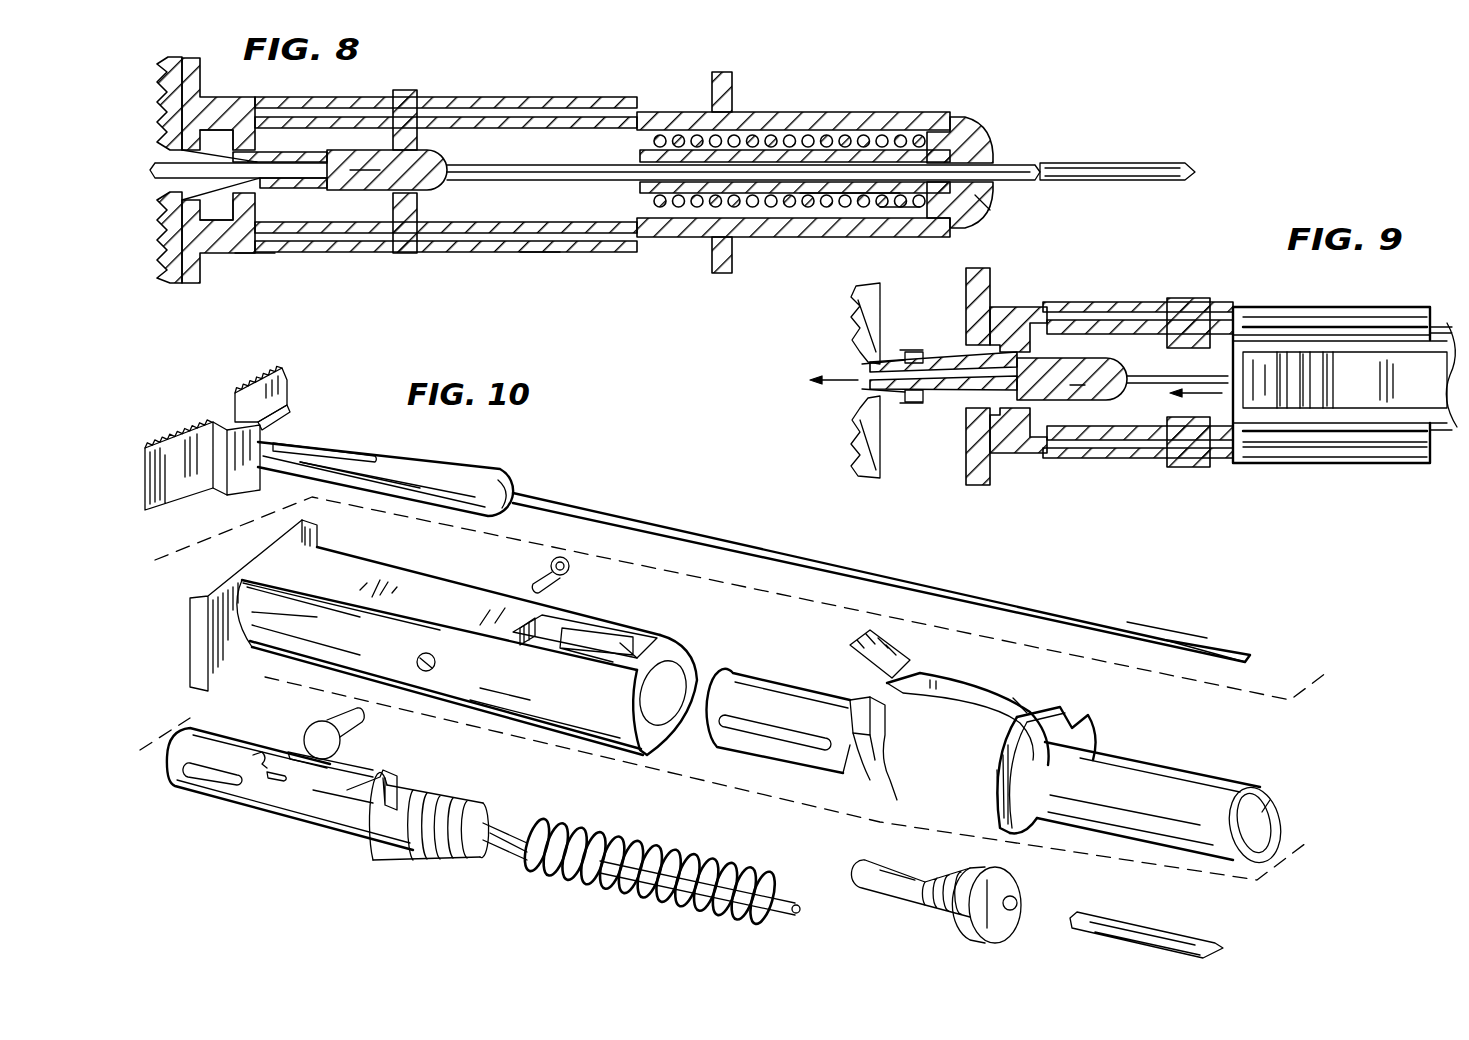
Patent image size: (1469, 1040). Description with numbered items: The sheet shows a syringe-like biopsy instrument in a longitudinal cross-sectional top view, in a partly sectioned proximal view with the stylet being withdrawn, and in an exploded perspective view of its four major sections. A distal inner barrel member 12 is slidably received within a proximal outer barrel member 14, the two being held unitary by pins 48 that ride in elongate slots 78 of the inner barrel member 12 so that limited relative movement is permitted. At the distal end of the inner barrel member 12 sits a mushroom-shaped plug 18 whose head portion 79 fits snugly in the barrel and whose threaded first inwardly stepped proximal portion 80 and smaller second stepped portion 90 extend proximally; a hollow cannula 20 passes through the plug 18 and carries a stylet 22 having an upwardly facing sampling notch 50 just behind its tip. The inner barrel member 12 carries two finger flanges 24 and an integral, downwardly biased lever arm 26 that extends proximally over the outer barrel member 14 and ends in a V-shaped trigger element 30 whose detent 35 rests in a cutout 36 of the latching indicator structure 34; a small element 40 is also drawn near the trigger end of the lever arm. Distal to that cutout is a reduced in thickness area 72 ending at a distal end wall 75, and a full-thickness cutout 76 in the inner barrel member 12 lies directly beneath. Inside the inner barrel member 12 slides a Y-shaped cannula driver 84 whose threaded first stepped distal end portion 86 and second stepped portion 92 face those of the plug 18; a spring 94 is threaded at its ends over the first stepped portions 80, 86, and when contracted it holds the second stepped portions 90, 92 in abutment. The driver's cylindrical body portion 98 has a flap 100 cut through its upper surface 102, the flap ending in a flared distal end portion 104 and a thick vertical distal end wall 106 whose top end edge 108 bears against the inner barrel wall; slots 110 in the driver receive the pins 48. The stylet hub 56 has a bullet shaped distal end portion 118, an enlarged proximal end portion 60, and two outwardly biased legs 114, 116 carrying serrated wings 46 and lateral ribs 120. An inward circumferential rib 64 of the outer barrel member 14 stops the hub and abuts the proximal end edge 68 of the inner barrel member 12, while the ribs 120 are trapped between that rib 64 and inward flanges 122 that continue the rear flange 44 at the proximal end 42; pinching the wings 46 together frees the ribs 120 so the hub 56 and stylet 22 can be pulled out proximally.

In FIG. 8, the inner barrel member 12 is at (874, 106).
In FIG. 9, the inner barrel member 12 is at (1080, 328).
In FIG. 10, the inner barrel member 12 is at (1207, 768).
In FIG. 8, the outer barrel member 14 is at (554, 94).
In FIG. 9, the outer barrel member 14 is at (1222, 316).
In FIG. 10, the outer barrel member 14 is at (488, 583).
In FIG. 8, the plug 18 is at (994, 133).
In FIG. 10, the plug 18 is at (1028, 893).
In FIG. 8, the cannula 20 is at (1082, 164).
In FIG. 10, the cannula 20 is at (789, 918).
In FIG. 8, the stylet 22 is at (485, 183).
In FIG. 10, the stylet 22 is at (617, 510).
In FIG. 8, the finger flanges 24 is at (733, 82).
In FIG. 10, the finger flanges 24 is at (1088, 730).
In FIG. 9, the lever arm 26 is at (1400, 395).
In FIG. 10, the lever arm 26 is at (1036, 698).
In FIG. 10, the trigger element 30 is at (880, 700).
In FIG. 10, the latching indicator structure 34 is at (612, 624).
In FIG. 10, the detent 35 is at (876, 743).
In FIG. 10, the cutout 36 is at (552, 626).
In FIG. 10, the serrated button 40 is at (897, 640).
In FIG. 8, the proximal end 42 is at (197, 72).
In FIG. 9, the proximal end 42 is at (1008, 465).
In FIG. 10, the proximal end 42 is at (330, 548).
In FIG. 8, the rear flange 44 is at (197, 260).
In FIG. 9, the rear flange 44 is at (992, 279).
In FIG. 10, the rear flange 44 is at (220, 628).
In FIG. 8, the wings 46 is at (167, 241).
In FIG. 9, the wings 46 is at (870, 338).
In FIG. 10, the wings 46 is at (250, 392).
In FIG. 8, the pins 48 is at (410, 253).
In FIG. 9, the pins 48 is at (1196, 468).
In FIG. 10, the pins 48 is at (560, 578).
In FIG. 10, the sampling notch 50 is at (1180, 630).
In FIG. 8, the stylet hub 56 is at (320, 197).
In FIG. 9, the stylet hub 56 is at (1113, 405).
In FIG. 10, the stylet hub 56 is at (459, 459).
In FIG. 10, the proximal end portion 60 is at (216, 487).
In FIG. 8, the rib 64 is at (240, 128).
In FIG. 8, the proximal end edge 68 is at (258, 240).
In FIG. 10, the proximal end edge 68 is at (712, 730).
In FIG. 10, the reduced in thickness area 72 is at (603, 650).
In FIG. 10, the distal end wall 75 is at (660, 640).
In FIG. 10, the cutout 76 is at (850, 753).
In FIG. 10, the slots 78 is at (795, 742).
In FIG. 8, the head portion 79 is at (988, 208).
In FIG. 10, the head portion 79 is at (1020, 873).
In FIG. 8, the first inwardly stepped proximal portion 80 is at (902, 208).
In FIG. 10, the first inwardly stepped proximal portion 80 is at (946, 862).
In FIG. 10, the cannula driver 84 is at (200, 804).
In FIG. 8, the first inwardly stepped distal end portion 86 is at (650, 195).
In FIG. 10, the first inwardly stepped distal end portion 86 is at (460, 857).
In FIG. 8, the second inwardly stepped portion 90 is at (851, 195).
In FIG. 10, the second inwardly stepped portion 90 is at (890, 876).
In FIG. 8, the second inwardly stepped portion 92 is at (733, 183).
In FIG. 10, the second inwardly stepped portion 92 is at (500, 812).
In FIG. 8, the spring 94 is at (790, 208).
In FIG. 10, the spring 94 is at (622, 903).
In FIG. 8, the body portion 98 is at (540, 254).
In FIG. 10, the flap 100 is at (330, 777).
In FIG. 10, the upper surface 102 is at (262, 765).
In FIG. 10, the distal end portion 104 is at (372, 793).
In FIG. 10, the distal end wall 106 is at (402, 797).
In FIG. 10, the top end edge 108 is at (390, 775).
In FIG. 10, the slots 110 is at (230, 790).
In FIG. 8, the leg 114 is at (297, 152).
In FIG. 9, the leg 114 is at (937, 353).
In FIG. 10, the leg 114 is at (335, 446).
In FIG. 8, the leg 116 is at (291, 186).
In FIG. 9, the leg 116 is at (937, 410).
In FIG. 10, the leg 116 is at (330, 470).
In FIG. 8, the bullet shaped distal end portion 118 is at (365, 180).
In FIG. 9, the bullet shaped distal end portion 118 is at (1077, 387).
In FIG. 10, the bullet shaped distal end portion 118 is at (496, 472).
In FIG. 8, the rib 120 is at (215, 170).
In FIG. 9, the rib 120 is at (922, 327).
In FIG. 8, the flanges 122 is at (210, 152).
In FIG. 9, the flanges 122 is at (970, 335).